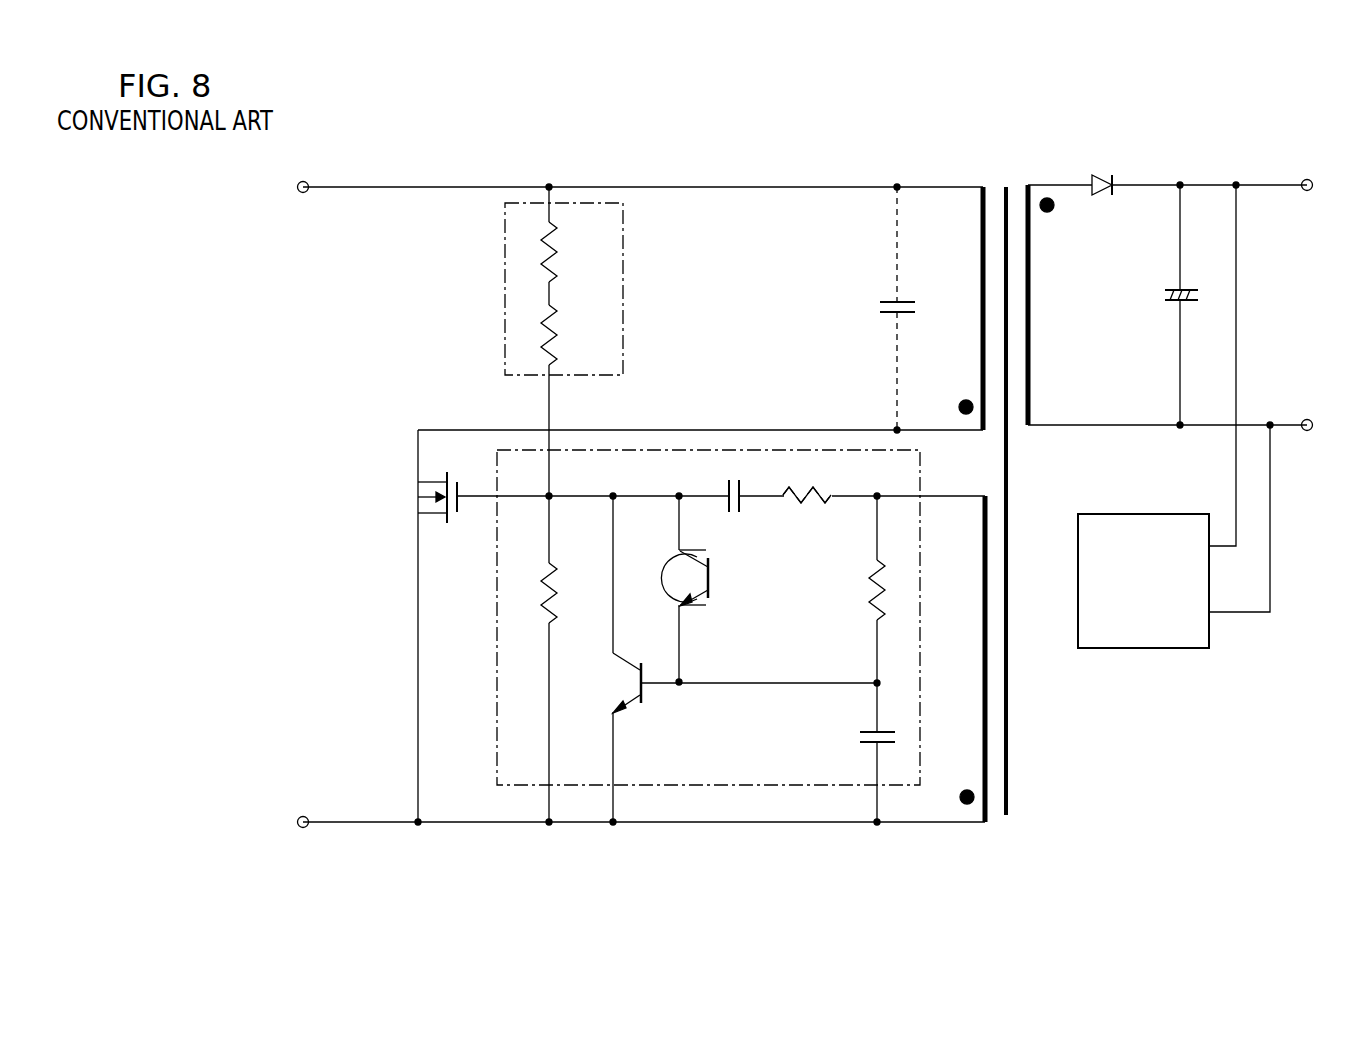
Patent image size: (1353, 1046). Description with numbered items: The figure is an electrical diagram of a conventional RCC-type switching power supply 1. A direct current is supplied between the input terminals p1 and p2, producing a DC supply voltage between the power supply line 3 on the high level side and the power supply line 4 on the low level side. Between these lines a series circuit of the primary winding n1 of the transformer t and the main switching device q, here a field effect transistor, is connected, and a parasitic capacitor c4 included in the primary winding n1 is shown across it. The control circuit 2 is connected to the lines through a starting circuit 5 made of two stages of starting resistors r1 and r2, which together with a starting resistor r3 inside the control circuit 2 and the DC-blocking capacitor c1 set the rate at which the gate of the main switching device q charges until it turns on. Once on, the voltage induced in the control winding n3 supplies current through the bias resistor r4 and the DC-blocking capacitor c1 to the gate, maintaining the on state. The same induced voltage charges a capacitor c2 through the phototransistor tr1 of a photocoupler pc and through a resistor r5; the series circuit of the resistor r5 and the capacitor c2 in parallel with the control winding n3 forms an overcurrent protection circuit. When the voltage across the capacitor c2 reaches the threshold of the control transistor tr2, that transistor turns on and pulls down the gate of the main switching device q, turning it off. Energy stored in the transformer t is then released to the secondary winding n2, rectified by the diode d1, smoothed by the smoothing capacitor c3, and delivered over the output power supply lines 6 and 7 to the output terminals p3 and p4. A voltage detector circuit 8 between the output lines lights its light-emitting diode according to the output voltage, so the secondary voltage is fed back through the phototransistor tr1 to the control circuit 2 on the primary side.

The switching power supply 1 is at (412, 126).
The control circuit 2 is at (716, 450).
The power supply line 3 is at (357, 187).
The power supply line 4 is at (352, 826).
The starting circuit 5 is at (626, 258).
The output power supply line 6 is at (1207, 184).
The output power supply line 7 is at (1212, 428).
The voltage detector circuit 8 is at (1145, 650).
The input terminal p1 is at (303, 181).
The input terminal p2 is at (303, 816).
The output terminal p3 is at (1306, 179).
The output terminal p4 is at (1306, 419).
The starting resistor r1 is at (558, 247).
The starting resistor r2 is at (558, 330).
The starting resistor r3 is at (552, 578).
The bias resistor r4 is at (820, 500).
The resistor r5 is at (872, 596).
The DC-blocking capacitor c1 is at (742, 512).
The capacitor c2 is at (862, 732).
The smoothing capacitor c3 is at (1172, 289).
The parasitic capacitor c4 is at (882, 300).
The diode d1 is at (1103, 180).
The main switching device q is at (438, 516).
The transformer t is at (1005, 188).
The primary winding n1 is at (982, 346).
The secondary winding n2 is at (1030, 345).
The control winding n3 is at (984, 655).
The phototransistor tr1 is at (710, 583).
The control transistor tr2 is at (628, 710).
The photocoupler pc is at (690, 608).